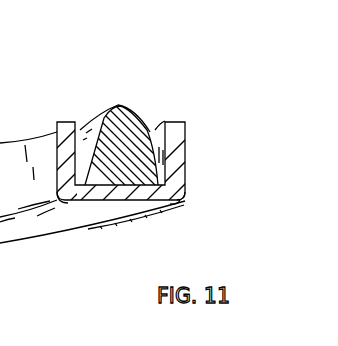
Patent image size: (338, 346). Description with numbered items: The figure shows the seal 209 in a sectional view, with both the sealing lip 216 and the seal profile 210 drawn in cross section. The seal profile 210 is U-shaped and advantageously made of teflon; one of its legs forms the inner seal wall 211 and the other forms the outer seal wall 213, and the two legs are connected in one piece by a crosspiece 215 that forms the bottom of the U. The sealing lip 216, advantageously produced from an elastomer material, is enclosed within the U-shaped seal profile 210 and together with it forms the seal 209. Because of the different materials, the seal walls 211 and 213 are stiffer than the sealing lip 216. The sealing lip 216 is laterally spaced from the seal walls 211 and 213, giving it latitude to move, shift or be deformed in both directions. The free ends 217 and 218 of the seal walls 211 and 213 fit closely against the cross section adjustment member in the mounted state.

The seal 209 is at (190, 42).
The seal profile 210 is at (190, 183).
The inner seal wall 211 is at (60, 152).
The outer seal wall 213 is at (178, 143).
The crosspiece 215 is at (125, 200).
The sealing lip 216 is at (128, 110).
The free end 217 is at (68, 121).
The free end 218 is at (180, 121).